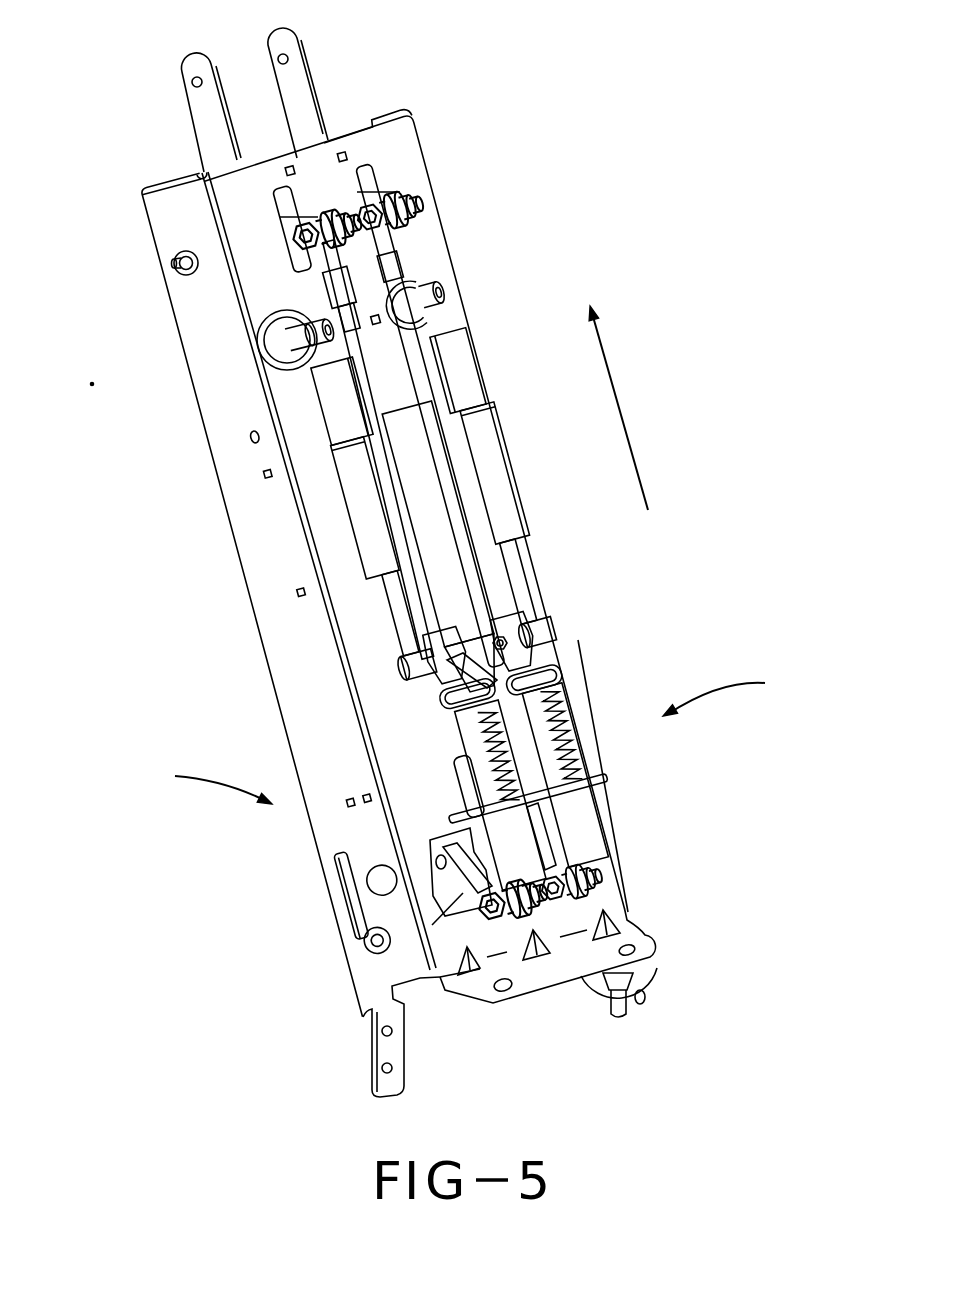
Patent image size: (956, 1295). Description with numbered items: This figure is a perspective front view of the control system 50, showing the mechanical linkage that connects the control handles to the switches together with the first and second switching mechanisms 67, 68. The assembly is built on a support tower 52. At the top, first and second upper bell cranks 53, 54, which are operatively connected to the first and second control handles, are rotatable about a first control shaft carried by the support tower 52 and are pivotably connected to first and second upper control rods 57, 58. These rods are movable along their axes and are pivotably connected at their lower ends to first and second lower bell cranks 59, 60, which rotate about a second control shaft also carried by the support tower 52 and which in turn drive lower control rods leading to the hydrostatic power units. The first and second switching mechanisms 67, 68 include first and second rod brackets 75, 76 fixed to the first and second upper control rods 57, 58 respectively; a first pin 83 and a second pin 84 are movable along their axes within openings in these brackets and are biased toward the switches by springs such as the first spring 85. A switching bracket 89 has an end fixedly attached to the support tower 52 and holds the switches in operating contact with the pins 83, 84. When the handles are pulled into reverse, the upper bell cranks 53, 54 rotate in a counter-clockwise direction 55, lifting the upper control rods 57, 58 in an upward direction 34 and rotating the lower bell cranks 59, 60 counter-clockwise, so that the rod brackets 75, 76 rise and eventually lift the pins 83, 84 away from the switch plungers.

The control system 50 is at (545, 132).
The support tower 52 is at (205, 394).
The first upper bell crank 53 is at (278, 44).
The second upper bell crank 54 is at (188, 72).
The counter-clockwise direction 55 is at (177, 267).
The first upper control rod 57 is at (435, 373).
The second upper control rod 58 is at (383, 437).
The upward direction 34 is at (628, 433).
The second pin 84 is at (480, 672).
The first pin 83 is at (540, 660).
The first rod bracket 75 is at (567, 693).
The second rod bracket 76 is at (453, 723).
The first spring 85 is at (572, 733).
The switching bracket 89 is at (600, 783).
The first lower bell crank 59 is at (545, 866).
The second lower bell crank 60 is at (463, 890).
The first switching mechanism 67 is at (733, 693).
The second switching mechanism 68 is at (201, 784).